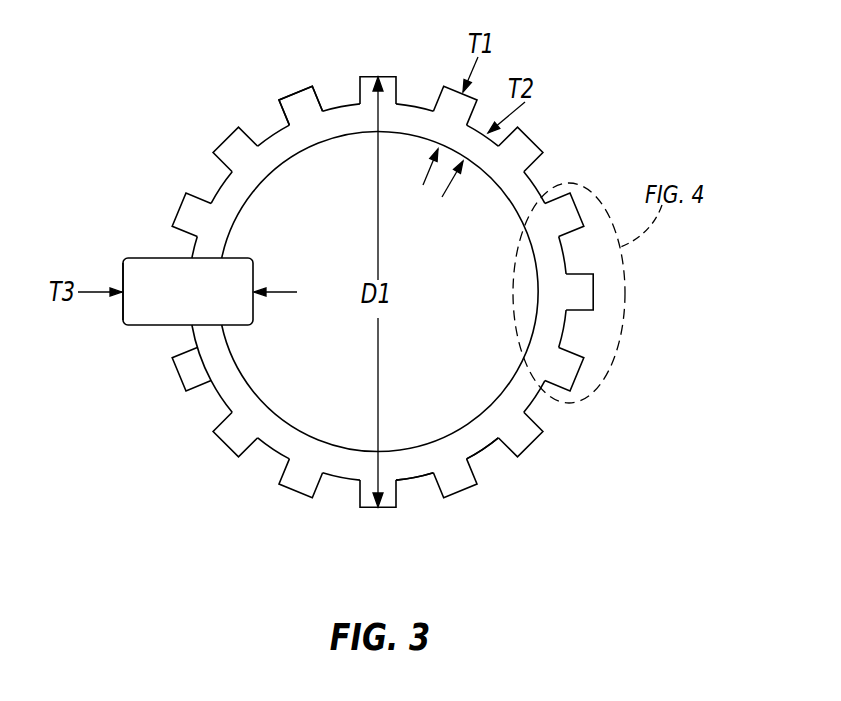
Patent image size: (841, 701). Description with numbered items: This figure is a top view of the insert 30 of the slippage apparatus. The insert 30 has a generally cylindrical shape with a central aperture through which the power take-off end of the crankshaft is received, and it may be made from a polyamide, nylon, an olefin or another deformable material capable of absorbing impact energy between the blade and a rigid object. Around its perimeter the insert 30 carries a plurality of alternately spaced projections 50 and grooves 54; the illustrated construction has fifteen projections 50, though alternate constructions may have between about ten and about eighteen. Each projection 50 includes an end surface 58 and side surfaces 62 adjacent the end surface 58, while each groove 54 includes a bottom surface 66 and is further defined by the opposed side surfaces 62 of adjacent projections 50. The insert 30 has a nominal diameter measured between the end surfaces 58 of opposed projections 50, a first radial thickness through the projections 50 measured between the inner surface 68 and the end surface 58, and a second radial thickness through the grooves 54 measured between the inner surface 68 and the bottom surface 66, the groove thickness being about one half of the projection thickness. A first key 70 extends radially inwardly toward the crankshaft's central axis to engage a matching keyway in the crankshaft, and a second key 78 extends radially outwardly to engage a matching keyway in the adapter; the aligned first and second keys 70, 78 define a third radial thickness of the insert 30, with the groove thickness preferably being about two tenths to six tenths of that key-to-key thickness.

The insert 30 is at (607, 58).
The projections 50 is at (180, 210).
The grooves 54 is at (238, 368).
The end surface 58 is at (586, 195).
The side surfaces 62 is at (360, 90).
The bottom surface 66 is at (416, 482).
The inner surface 68 is at (227, 445).
The first key 70 is at (242, 273).
The second key 78 is at (127, 307).